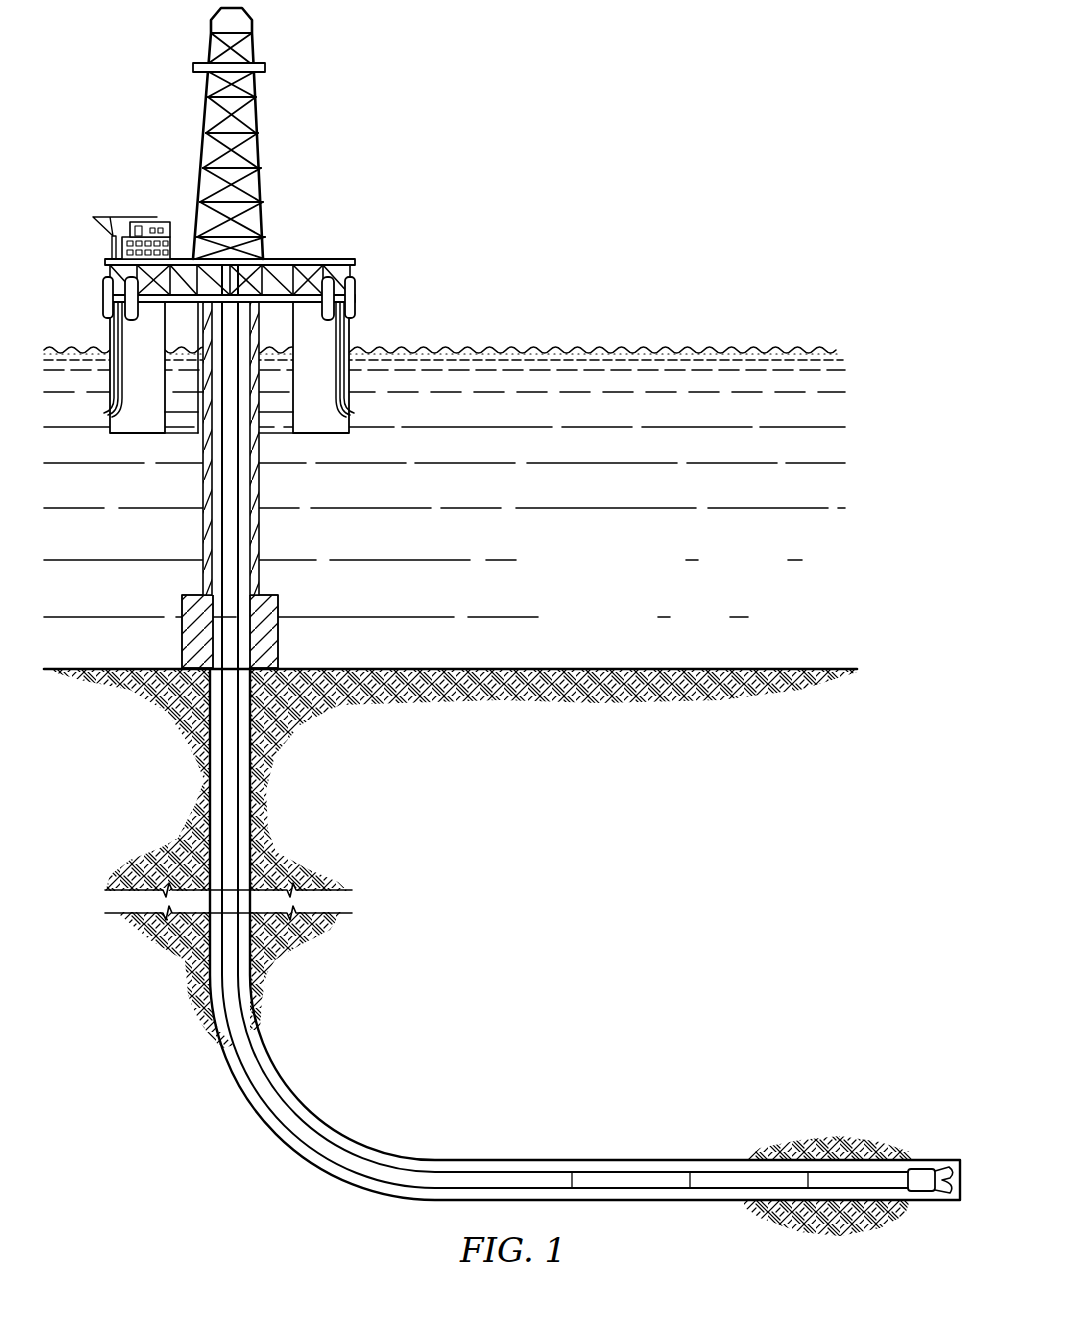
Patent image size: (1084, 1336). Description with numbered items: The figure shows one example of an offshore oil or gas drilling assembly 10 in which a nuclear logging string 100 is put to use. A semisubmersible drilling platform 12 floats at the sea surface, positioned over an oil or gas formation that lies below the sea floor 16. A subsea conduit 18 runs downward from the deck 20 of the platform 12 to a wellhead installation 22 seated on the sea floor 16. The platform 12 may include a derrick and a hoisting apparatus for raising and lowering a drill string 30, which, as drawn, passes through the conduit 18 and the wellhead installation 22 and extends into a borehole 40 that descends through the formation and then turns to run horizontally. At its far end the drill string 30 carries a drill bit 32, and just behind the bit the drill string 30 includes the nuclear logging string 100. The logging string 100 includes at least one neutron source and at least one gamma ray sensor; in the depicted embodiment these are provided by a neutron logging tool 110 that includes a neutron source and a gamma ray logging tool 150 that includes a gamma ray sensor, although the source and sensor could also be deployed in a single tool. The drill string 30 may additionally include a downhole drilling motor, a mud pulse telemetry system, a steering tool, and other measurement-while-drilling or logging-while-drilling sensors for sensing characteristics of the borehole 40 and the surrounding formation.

The offshore oil or gas drilling assembly 10 is at (502, 628).
The semisubmersible drilling platform 12 is at (340, 260).
The sea floor 16 is at (510, 668).
The subsea conduit 18 is at (259, 532).
The deck 20 is at (357, 297).
The wellhead installation 22 is at (268, 595).
The drill string 30 is at (230, 448).
The drill bit 32 is at (927, 1170).
The borehole 40 is at (209, 795).
The nuclear logging string 100 is at (765, 1158).
The neutron logging tool 110 is at (627, 1178).
The gamma ray logging tool 150 is at (727, 1186).